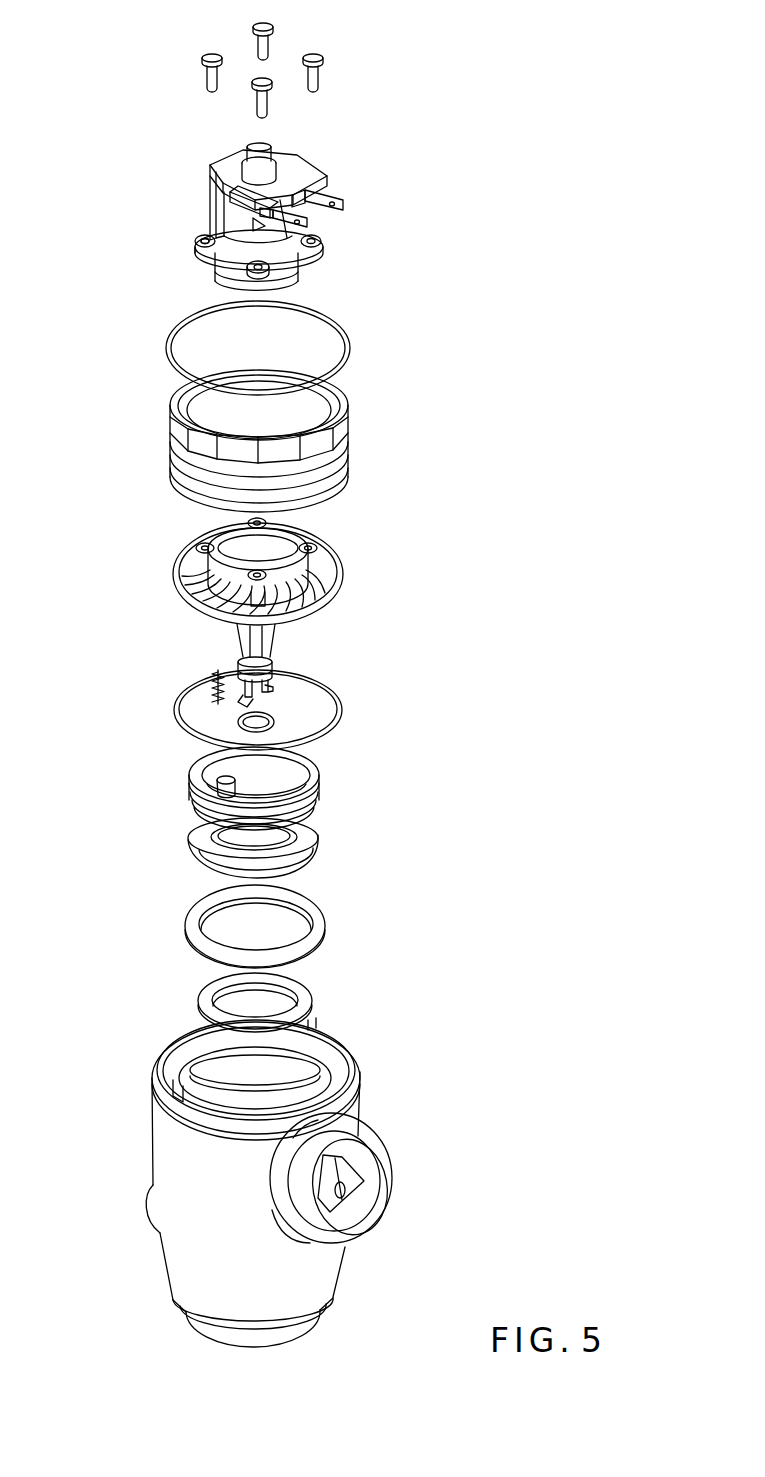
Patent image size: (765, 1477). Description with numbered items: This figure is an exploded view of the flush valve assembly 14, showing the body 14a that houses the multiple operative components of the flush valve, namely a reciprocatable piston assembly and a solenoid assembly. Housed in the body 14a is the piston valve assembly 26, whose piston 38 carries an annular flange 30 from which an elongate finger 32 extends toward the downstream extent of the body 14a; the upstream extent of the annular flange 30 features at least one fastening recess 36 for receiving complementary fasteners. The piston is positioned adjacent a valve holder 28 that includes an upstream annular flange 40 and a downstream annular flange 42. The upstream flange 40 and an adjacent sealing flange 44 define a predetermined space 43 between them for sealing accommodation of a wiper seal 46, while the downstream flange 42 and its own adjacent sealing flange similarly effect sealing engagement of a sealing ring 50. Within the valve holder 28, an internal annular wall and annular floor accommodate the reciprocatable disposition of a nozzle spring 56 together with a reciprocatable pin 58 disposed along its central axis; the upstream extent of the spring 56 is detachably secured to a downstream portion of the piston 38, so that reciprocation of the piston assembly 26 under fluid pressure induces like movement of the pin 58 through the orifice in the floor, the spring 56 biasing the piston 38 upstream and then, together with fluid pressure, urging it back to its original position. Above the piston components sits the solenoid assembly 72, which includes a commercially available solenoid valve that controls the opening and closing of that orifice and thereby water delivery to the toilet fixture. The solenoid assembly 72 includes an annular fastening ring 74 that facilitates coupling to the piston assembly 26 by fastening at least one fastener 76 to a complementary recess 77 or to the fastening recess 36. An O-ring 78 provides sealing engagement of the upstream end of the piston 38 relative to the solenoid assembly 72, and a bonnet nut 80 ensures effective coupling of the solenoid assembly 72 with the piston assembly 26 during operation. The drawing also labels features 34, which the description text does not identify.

The flush valve assembly 14 is at (382, 133).
The body 14a is at (333, 1277).
The piston valve assembly 26 is at (114, 523).
The valve holder 28 is at (322, 610).
The annular flange 30 is at (333, 578).
The elongate finger 32 is at (277, 659).
The mounting holes 34 is at (270, 519).
The fastening recess 36 is at (202, 550).
The piston 38 is at (318, 847).
The upstream annular flange 40 is at (323, 773).
The downstream annular flange 42 is at (196, 848).
The predetermined space 43 is at (320, 800).
The sealing flange 44 is at (320, 813).
The wiper seal 46 is at (323, 930).
The sealing ring 50 is at (318, 998).
The nozzle spring 56 is at (212, 680).
The reciprocatable pin 58 is at (210, 676).
The solenoid assembly 72 is at (322, 243).
The annular fastening ring 74 is at (207, 257).
The fastener 76 is at (203, 87).
The complementary recess 77 is at (197, 240).
The O-ring 78 is at (357, 350).
The bonnet nut 80 is at (347, 458).